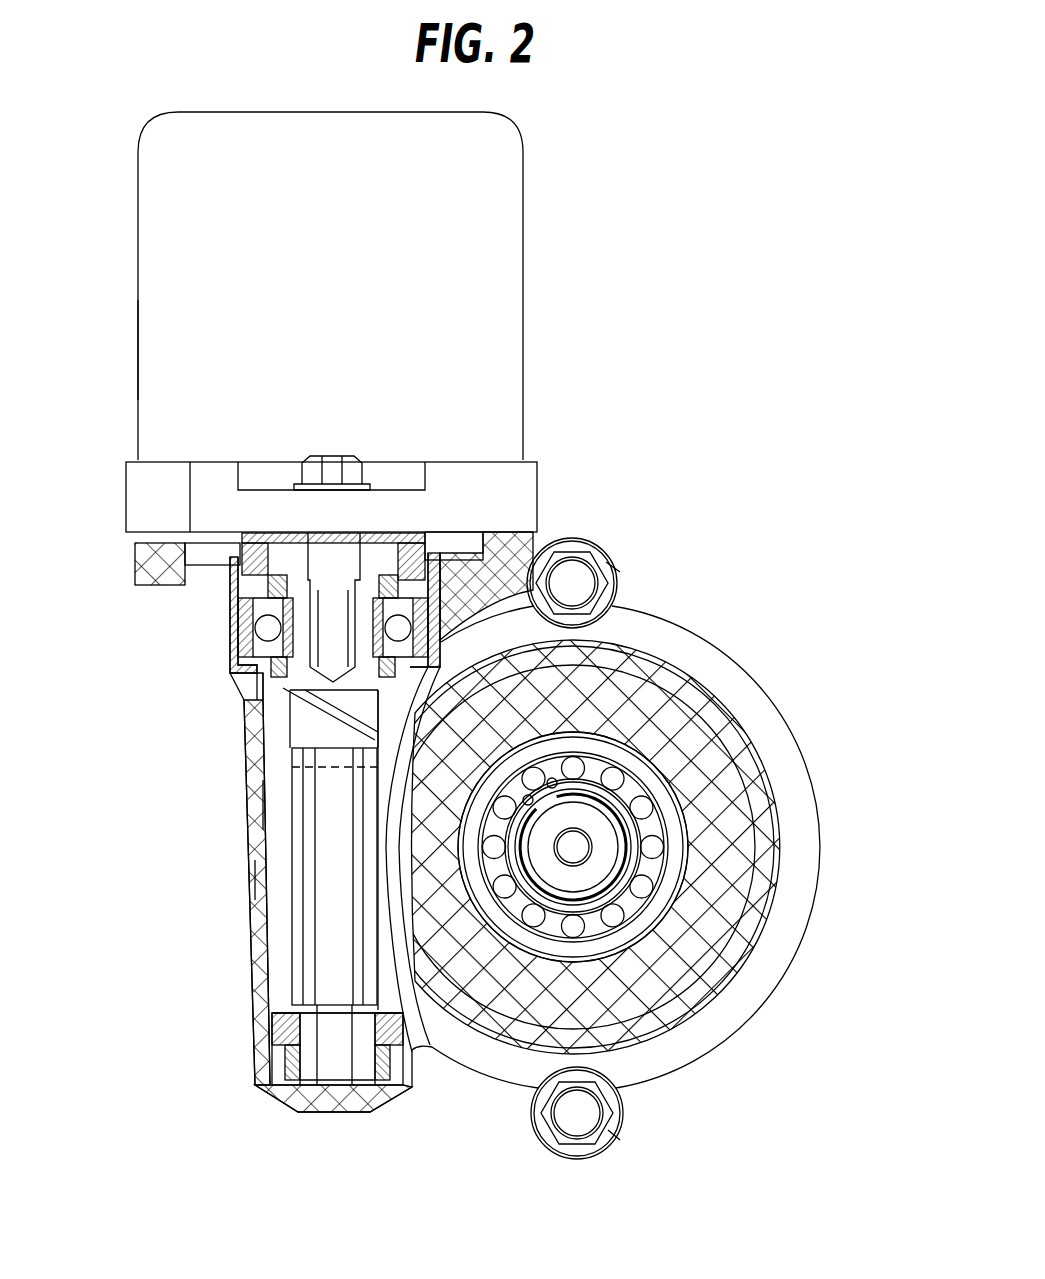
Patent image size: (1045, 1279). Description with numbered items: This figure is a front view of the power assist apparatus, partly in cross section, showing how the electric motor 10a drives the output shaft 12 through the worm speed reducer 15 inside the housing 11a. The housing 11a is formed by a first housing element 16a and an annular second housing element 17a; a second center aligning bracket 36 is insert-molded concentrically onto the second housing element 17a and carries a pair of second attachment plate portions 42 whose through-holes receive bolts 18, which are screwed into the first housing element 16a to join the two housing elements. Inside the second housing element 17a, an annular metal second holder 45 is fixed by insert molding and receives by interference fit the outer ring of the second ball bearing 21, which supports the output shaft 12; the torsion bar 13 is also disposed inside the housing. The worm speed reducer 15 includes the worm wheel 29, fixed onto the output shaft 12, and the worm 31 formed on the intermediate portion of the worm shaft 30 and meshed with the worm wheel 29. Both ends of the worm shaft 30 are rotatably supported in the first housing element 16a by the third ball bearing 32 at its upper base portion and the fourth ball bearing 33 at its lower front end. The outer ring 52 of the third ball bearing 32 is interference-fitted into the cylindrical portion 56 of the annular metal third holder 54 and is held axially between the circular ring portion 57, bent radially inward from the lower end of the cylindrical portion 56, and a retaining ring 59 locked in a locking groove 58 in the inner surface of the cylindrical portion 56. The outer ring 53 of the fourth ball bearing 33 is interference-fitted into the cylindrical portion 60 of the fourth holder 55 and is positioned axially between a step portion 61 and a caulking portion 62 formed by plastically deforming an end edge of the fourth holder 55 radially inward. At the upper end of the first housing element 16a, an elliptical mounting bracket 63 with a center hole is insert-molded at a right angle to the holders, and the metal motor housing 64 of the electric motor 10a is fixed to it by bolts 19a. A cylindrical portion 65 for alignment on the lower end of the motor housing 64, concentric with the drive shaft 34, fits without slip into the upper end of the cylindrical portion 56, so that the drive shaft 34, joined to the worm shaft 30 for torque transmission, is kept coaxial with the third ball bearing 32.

The electric motor 10a is at (450, 206).
The motor housing 64 is at (185, 336).
The cylindrical portion for alignment 65 is at (422, 548).
The bolts 19a is at (330, 480).
The drive shaft 34 is at (342, 627).
The third ball bearing 32 is at (405, 628).
The third holder 54 is at (446, 605).
The mounting bracket 63 is at (165, 540).
The second attachment plate portions 42 is at (612, 565).
The bolts 18 is at (572, 583).
The retaining ring 59 is at (238, 572).
The locking groove 58 is at (250, 612).
The cylindrical portion 56 is at (262, 628).
The outer ring 52 is at (262, 655).
The second housing element 17a is at (683, 722).
The circular ring portion 57 is at (288, 688).
The second holder 45 is at (618, 790).
The worm shaft 30 is at (262, 735).
The worm speed reducer 15 is at (262, 803).
The second center aligning bracket 36 is at (794, 806).
The housing side wall 16a is at (258, 880).
The second ball bearing 21 is at (660, 850).
The worm 31 is at (298, 910).
The worm wheel 29 is at (305, 940).
The output shaft 12 is at (600, 850).
The caulking portion 62 is at (292, 1005).
The outer ring 53 is at (288, 1030).
The torsion bar 13 is at (642, 1015).
The cylindrical portion 60 is at (290, 1058).
The housing 11a is at (645, 1035).
The step portion 61 is at (300, 1080).
The fourth ball bearing 33 is at (408, 1060).
The fourth holder 55 is at (352, 1112).